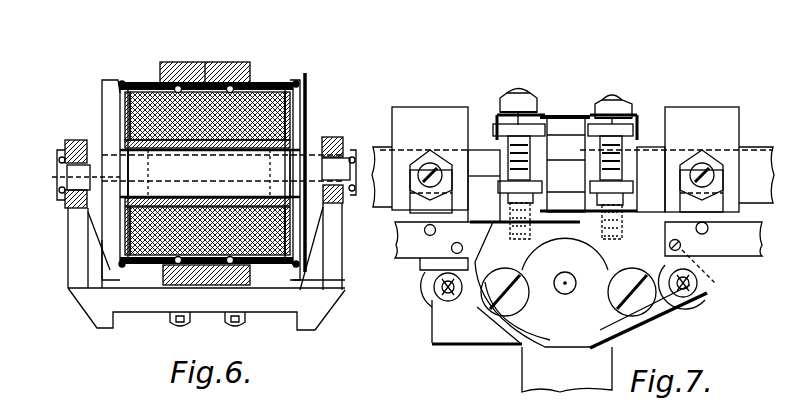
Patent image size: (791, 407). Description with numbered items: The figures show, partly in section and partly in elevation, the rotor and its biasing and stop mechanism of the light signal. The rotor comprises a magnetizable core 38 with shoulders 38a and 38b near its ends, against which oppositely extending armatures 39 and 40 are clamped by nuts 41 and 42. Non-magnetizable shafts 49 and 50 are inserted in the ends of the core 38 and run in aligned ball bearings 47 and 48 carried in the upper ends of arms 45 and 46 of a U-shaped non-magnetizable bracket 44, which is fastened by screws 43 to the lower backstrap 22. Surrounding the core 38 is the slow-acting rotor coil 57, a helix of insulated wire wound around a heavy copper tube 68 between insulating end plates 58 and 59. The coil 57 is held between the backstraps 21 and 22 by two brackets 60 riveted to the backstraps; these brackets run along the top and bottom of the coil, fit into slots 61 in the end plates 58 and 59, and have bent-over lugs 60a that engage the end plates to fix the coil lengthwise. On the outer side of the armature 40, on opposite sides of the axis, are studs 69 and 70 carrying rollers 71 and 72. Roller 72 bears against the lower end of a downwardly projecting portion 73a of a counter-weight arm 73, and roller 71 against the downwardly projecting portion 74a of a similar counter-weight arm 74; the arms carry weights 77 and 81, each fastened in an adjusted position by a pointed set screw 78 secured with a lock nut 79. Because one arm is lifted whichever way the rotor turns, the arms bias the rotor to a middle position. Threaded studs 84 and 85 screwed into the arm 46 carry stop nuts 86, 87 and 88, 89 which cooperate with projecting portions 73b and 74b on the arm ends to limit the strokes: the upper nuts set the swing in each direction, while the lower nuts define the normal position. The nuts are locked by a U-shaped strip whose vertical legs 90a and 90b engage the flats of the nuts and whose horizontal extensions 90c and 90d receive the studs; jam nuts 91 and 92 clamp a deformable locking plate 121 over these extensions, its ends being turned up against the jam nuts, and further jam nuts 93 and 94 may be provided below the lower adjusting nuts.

In FIG. 6, the upper backstrap 21 is at (247, 64).
In FIG. 6, the lower backstrap 22 is at (222, 284).
In FIG. 6, the core 38 is at (218, 196).
In FIG. 6, the shoulder 38a is at (270, 170).
In FIG. 6, the shoulder 38b is at (148, 170).
In FIG. 6, the armature 39 is at (290, 157).
In FIG. 6, the armature 40 is at (128, 162).
In FIG. 7, the armature 40 is at (470, 346).
In FIG. 6, the nut 41 is at (327, 135).
In FIG. 6, the nut 42 is at (82, 150).
In FIG. 6, the screws 43 is at (232, 325).
In FIG. 6, the non-magnetizable bracket 44 is at (283, 313).
In FIG. 6, the arm 45 is at (342, 243).
In FIG. 6, the arm 46 is at (67, 240).
In FIG. 7, the arm 46 is at (543, 307).
In FIG. 6, the ball bearing 47 is at (352, 150).
In FIG. 6, the ball bearing 48 is at (65, 163).
In FIG. 7, the ball bearing 48 is at (572, 330).
In FIG. 6, the shaft 49 is at (340, 200).
In FIG. 6, the shaft 50 is at (58, 190).
In FIG. 7, the shaft 50 is at (565, 294).
In FIG. 6, the rotor coil 57 is at (206, 90).
In FIG. 6, the insulating end plate 58 is at (307, 108).
In FIG. 6, the insulating end plate 59 is at (120, 119).
In FIG. 6, the brackets 60 is at (262, 81).
In FIG. 6, the lugs 60a is at (120, 70).
In FIG. 6, the slots 61 is at (125, 83).
In FIG. 6, the tube 68 is at (215, 149).
In FIG. 7, the stud 69 is at (696, 283).
In FIG. 7, the stud 70 is at (440, 290).
In FIG. 7, the roller 71 is at (698, 296).
In FIG. 7, the roller 72 is at (462, 298).
In FIG. 7, the counter-weight arm 73 is at (377, 169).
In FIG. 7, the downwardly projecting portion 73a is at (425, 264).
In FIG. 7, the projecting portion 73b is at (485, 186).
In FIG. 7, the counter-weight arm 74 is at (756, 147).
In FIG. 7, the downwardly projecting portion 74a is at (715, 262).
In FIG. 7, the projecting portion 74b is at (647, 179).
In FIG. 7, the weight 77 is at (430, 112).
In FIG. 7, the set screw 78 is at (432, 154).
In FIG. 7, the lock nut 79 is at (416, 155).
In FIG. 7, the weight 81 is at (730, 112).
In FIG. 7, the threaded stud 84 is at (520, 89).
In FIG. 7, the threaded stud 85 is at (612, 95).
In FIG. 7, the stop nut 86 is at (495, 130).
In FIG. 7, the stop nut 87 is at (498, 186).
In FIG. 7, the stop nut 88 is at (634, 130).
In FIG. 7, the stop nut 89 is at (634, 187).
In FIG. 7, the leg 90a is at (566, 147).
In FIG. 7, the leg 90b is at (566, 181).
In FIG. 7, the horizontal extension 90c is at (500, 115).
In FIG. 7, the horizontal extension 90d is at (638, 117).
In FIG. 7, the jam nut 91 is at (537, 110).
In FIG. 7, the jam nut 92 is at (630, 112).
In FIG. 7, the jam nut 93 is at (508, 196).
In FIG. 7, the jam nut 94 is at (625, 200).
In FIG. 7, the deformable locking plate 121 is at (572, 114).